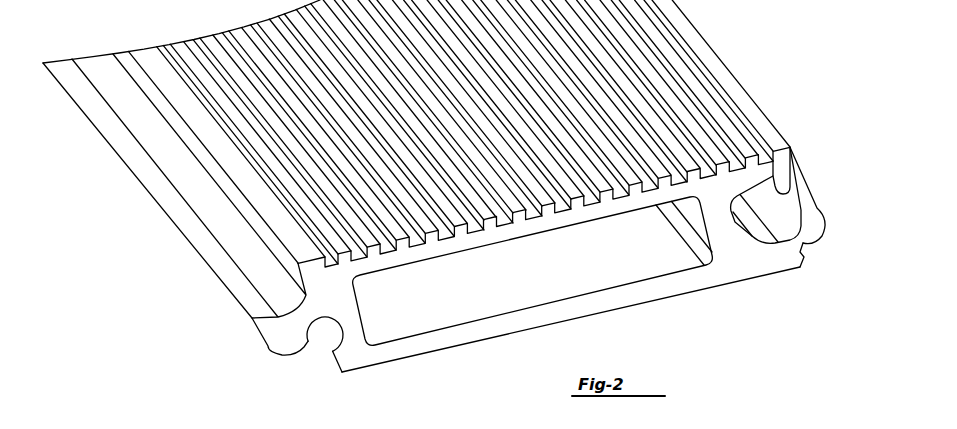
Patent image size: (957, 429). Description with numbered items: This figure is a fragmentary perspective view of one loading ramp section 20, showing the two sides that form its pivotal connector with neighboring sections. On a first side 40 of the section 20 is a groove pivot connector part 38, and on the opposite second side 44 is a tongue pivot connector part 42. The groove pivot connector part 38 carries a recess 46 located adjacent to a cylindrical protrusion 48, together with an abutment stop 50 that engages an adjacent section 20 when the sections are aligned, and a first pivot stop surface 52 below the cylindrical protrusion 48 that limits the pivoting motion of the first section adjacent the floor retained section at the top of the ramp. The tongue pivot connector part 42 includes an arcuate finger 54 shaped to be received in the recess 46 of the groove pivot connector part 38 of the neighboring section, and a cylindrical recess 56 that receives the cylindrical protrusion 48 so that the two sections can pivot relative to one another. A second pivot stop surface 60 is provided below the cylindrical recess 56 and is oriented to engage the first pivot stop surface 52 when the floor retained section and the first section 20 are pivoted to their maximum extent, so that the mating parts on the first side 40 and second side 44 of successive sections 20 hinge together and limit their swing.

The section 20 is at (462, 343).
The groove pivot connector part 38 is at (781, 260).
The first side 40 is at (712, 47).
The tongue pivot connector part 42 is at (198, 244).
The second side 44 is at (138, 62).
The recess 46 is at (742, 224).
The cylindrical protrusion 48 is at (803, 227).
The abutment stop 50 is at (793, 168).
The first pivot stop surface 52 is at (806, 255).
The arcuate finger 54 is at (262, 324).
The cylindrical recess 56 is at (336, 336).
The second pivot stop surface 60 is at (332, 370).